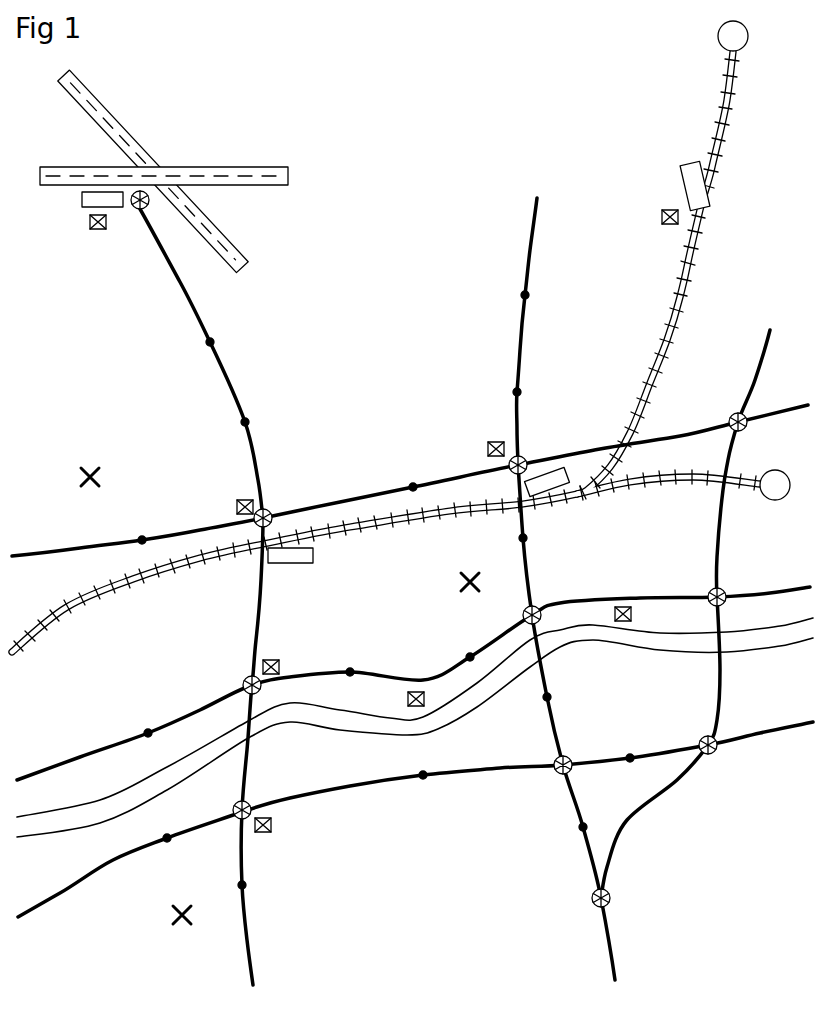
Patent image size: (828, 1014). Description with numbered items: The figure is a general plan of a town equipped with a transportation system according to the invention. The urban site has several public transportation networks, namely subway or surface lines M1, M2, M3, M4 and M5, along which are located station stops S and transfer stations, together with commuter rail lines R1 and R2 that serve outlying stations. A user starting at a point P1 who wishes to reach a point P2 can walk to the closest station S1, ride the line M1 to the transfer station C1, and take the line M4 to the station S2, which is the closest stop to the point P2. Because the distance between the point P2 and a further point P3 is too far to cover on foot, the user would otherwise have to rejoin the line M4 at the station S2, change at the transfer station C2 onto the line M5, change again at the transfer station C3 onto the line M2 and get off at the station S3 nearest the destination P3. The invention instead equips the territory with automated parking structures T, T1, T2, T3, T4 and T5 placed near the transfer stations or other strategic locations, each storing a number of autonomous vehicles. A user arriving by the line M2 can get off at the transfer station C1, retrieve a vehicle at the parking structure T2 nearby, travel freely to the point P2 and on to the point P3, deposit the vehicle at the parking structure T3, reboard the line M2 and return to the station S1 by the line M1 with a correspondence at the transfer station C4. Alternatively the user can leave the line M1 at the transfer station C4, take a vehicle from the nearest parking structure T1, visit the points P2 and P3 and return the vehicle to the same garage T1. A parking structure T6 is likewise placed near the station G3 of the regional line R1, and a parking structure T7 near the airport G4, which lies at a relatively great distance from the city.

The public transportation line M1 is at (202, 532).
The public transportation line M2 is at (228, 390).
The public transportation line M3 is at (186, 714).
The public transportation line M4 is at (515, 360).
The public transportation line M5 is at (188, 830).
The station stop S is at (252, 422).
The station S1 is at (142, 540).
The station S2 is at (527, 540).
The station S3 is at (247, 888).
The transfer station C1 is at (521, 455).
The transfer station C2 is at (566, 758).
The transfer station C3 is at (247, 805).
The transfer station C4 is at (270, 512).
The automated parking structure T is at (424, 698).
The automated parking structure T1 is at (237, 507).
The automated parking structure T2 is at (488, 451).
The automated parking structure T3 is at (271, 828).
The automated parking structure T4 is at (279, 665).
The automated parking structure T5 is at (631, 612).
The automated parking structure T6 is at (663, 218).
The automated parking structure T7 is at (97, 229).
The point P1 is at (85, 485).
The point P2 is at (462, 592).
The point P3 is at (175, 920).
The station G3 is at (690, 192).
The airport G4 is at (82, 198).
The commuter rail line R1 is at (733, 36).
The commuter rail line R2 is at (775, 485).